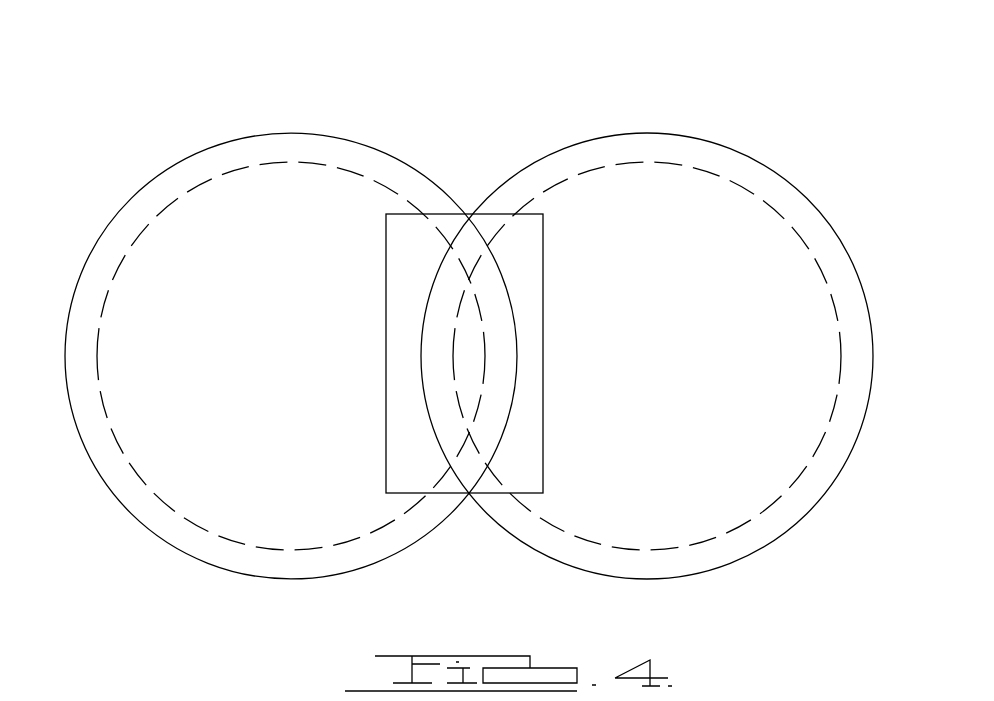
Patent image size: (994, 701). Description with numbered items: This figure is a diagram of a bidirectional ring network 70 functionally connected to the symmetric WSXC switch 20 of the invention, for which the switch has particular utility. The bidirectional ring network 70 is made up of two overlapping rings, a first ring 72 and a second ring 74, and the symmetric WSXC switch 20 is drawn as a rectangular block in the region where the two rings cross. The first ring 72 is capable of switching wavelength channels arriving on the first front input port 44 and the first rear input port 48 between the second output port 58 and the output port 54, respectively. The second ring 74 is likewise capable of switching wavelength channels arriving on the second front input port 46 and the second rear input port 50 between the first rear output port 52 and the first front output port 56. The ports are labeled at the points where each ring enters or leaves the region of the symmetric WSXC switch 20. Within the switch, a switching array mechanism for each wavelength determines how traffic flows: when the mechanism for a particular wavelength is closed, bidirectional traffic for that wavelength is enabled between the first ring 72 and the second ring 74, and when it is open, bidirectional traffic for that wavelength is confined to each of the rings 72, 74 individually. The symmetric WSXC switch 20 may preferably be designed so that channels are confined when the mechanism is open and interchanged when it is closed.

The symmetric WSXC switch 20 is at (543, 353).
The first front input port 44 is at (395, 520).
The second front input port 46 is at (545, 522).
The first rear input port 48 is at (417, 171).
The second rear input port 50 is at (525, 169).
The first rear output port 52 is at (558, 561).
The output port 54 is at (362, 570).
The first front output port 56 is at (583, 172).
The second output port 58 is at (375, 181).
The bidirectional ring network 70 is at (727, 127).
The first ring 72 is at (125, 183).
The second ring 74 is at (833, 217).